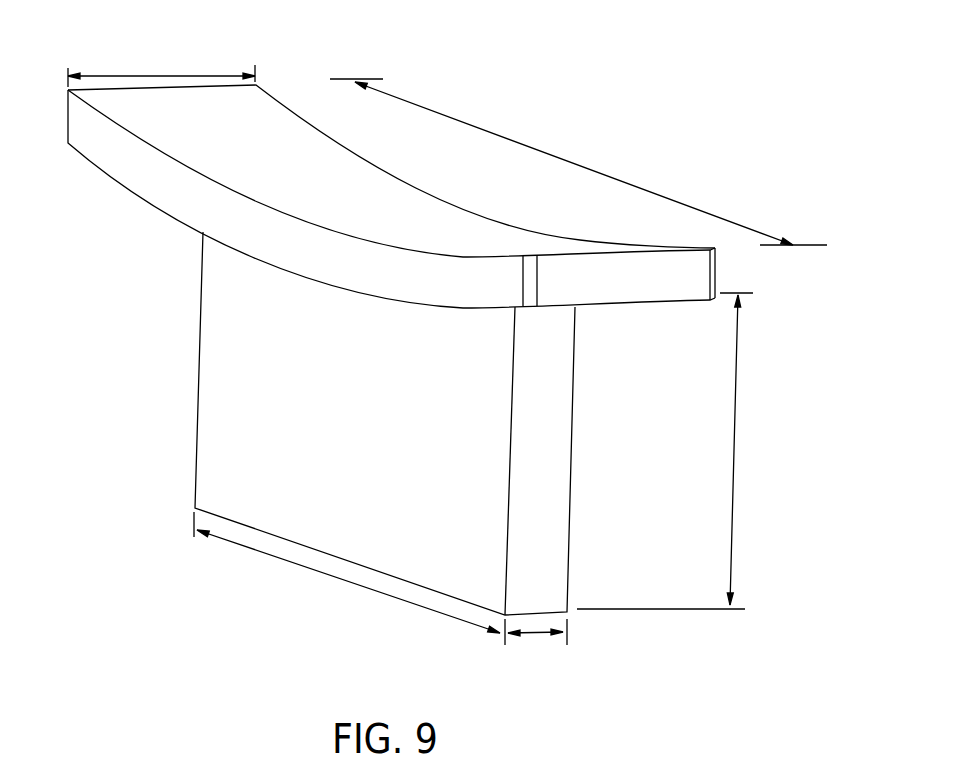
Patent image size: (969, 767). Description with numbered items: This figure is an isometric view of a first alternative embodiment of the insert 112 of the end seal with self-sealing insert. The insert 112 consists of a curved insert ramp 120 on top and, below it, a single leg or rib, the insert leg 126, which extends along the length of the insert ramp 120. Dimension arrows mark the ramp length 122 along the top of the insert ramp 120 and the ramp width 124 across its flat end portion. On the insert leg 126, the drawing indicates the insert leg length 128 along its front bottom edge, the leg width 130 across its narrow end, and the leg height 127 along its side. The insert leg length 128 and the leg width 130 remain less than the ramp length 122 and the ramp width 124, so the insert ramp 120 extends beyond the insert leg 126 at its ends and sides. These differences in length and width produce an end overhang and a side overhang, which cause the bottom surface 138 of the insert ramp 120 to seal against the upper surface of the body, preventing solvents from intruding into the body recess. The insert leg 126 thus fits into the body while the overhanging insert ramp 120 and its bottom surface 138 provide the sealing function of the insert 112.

The insert 112 is at (530, 98).
The insert ramp 120 is at (272, 135).
The ramp length 122 is at (573, 163).
The ramp width 124 is at (160, 70).
The insert leg 126 is at (227, 400).
The leg height 127 is at (737, 487).
The insert leg length 128 is at (347, 581).
The leg width 130 is at (535, 636).
The bottom surface 138 is at (133, 194).